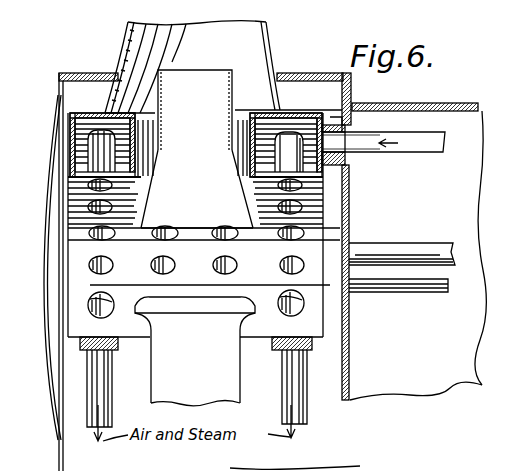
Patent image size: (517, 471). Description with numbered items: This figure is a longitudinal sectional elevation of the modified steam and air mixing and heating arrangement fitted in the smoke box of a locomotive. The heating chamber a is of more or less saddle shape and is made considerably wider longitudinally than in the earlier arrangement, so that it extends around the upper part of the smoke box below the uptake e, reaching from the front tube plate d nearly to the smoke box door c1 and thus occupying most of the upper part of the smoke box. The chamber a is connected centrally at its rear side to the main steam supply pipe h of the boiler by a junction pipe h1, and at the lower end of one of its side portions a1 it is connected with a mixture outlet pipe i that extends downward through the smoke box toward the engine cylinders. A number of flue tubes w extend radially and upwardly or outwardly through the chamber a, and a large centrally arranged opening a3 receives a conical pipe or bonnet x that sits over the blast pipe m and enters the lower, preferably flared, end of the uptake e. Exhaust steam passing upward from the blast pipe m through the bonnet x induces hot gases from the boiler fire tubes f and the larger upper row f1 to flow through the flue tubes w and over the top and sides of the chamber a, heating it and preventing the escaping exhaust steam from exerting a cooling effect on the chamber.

The uptake e is at (192, 67).
The pipe or bonnet x is at (195, 149).
The centrally arranged opening a3 is at (150, 162).
The heating chamber a is at (286, 145).
The flue tubes w is at (113, 266).
The smoke box door c1 is at (57, 250).
The front tube plate d is at (351, 212).
The main steam supply pipe h is at (383, 154).
The junction pipe h1 is at (385, 153).
The upper row of fire tubes f1 is at (402, 245).
The fire tubes f is at (426, 292).
The blast pipe m is at (195, 351).
The side portions a1 is at (100, 318).
The mixture outlet pipe i is at (106, 399).